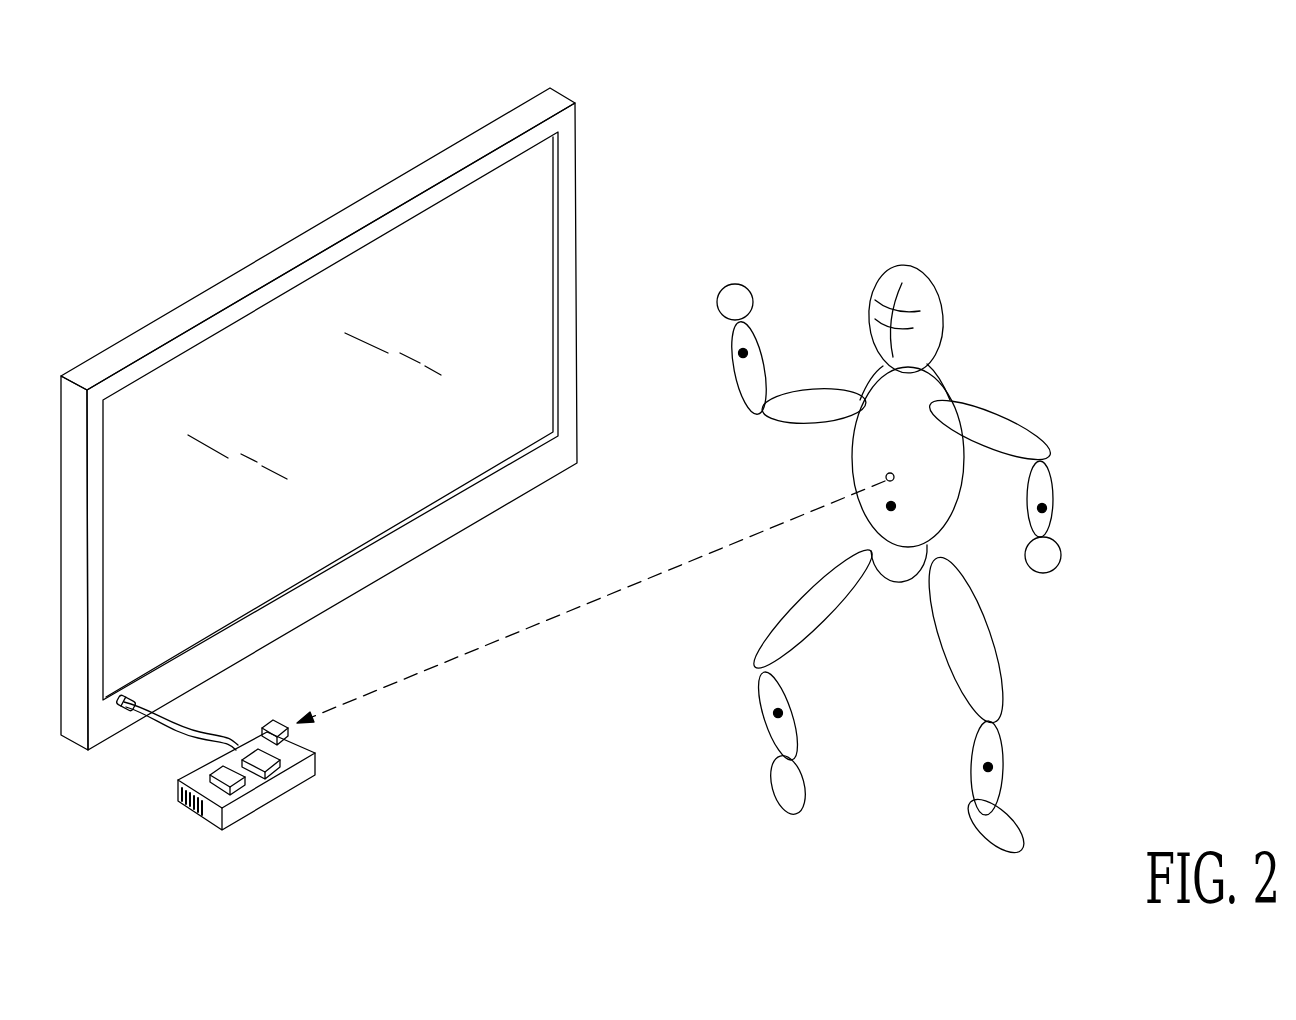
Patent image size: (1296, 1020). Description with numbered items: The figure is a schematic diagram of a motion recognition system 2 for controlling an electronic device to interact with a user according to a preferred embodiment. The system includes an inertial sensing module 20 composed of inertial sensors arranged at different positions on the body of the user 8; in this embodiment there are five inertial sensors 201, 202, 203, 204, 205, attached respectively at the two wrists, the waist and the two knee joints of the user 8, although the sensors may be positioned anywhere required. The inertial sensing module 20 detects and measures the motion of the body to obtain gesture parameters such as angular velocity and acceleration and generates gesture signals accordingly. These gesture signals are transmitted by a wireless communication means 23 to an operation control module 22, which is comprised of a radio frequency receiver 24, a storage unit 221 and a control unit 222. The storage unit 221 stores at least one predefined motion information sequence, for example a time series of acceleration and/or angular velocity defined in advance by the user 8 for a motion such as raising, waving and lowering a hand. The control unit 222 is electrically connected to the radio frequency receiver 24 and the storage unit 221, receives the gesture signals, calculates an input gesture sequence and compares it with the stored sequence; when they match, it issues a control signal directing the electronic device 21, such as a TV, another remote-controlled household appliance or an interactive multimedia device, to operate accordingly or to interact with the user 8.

The motion recognition system 2 is at (256, 203).
The electronic device 21 is at (562, 92).
The operation control module 22 is at (232, 822).
The storage unit 221 is at (280, 776).
The control unit 222 is at (266, 814).
The radio frequency receiver 24 is at (277, 718).
The wireless communication means 23 is at (887, 472).
The inertial sensing module 20 is at (716, 356).
The user 8 is at (923, 282).
The inertial sensor 201 is at (748, 352).
The inertial sensor 202 is at (1047, 505).
The inertial sensor 203 is at (885, 508).
The inertial sensor 204 is at (774, 712).
The inertial sensor 205 is at (982, 767).